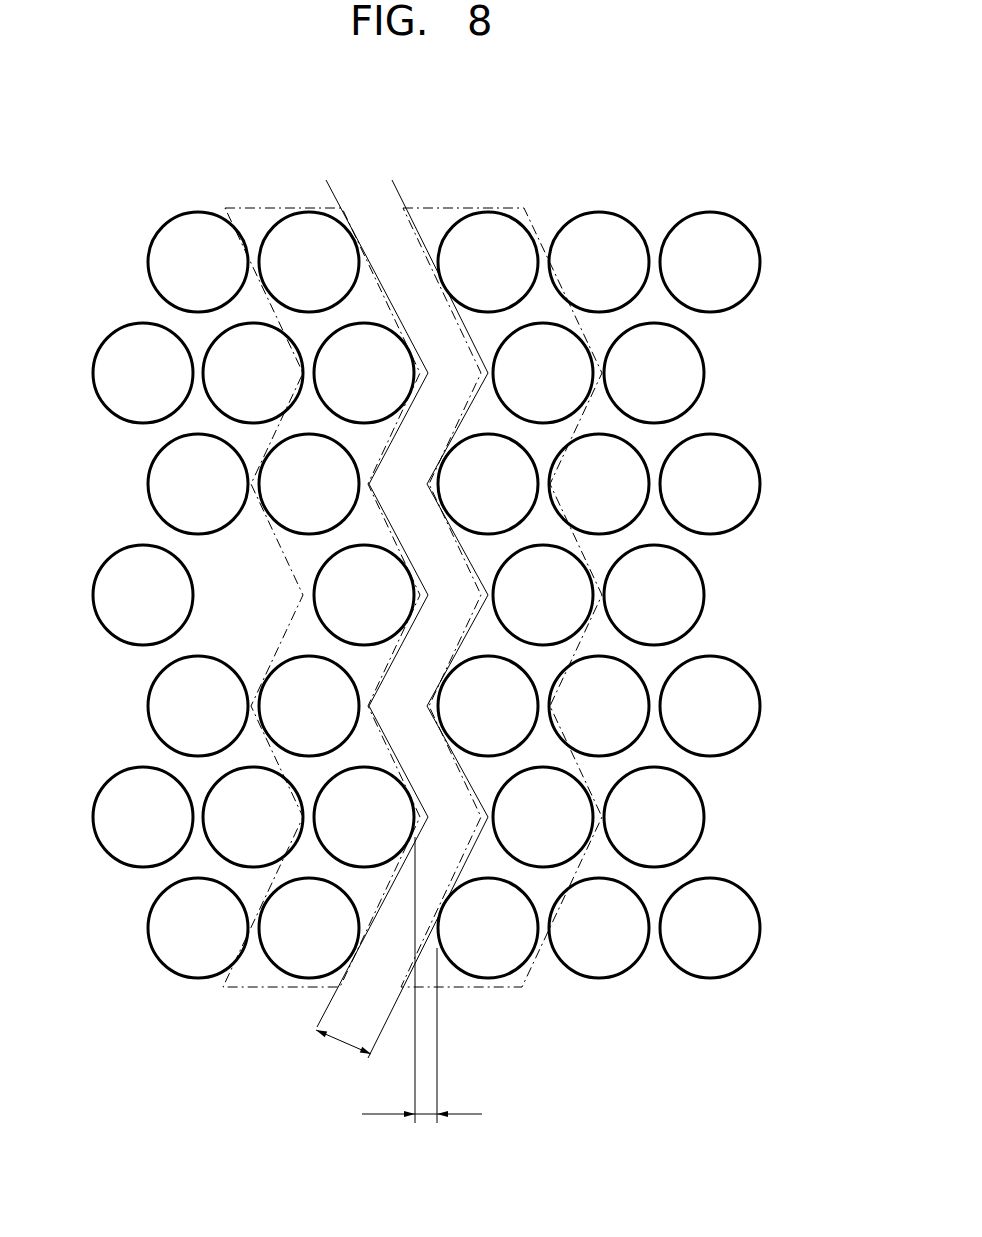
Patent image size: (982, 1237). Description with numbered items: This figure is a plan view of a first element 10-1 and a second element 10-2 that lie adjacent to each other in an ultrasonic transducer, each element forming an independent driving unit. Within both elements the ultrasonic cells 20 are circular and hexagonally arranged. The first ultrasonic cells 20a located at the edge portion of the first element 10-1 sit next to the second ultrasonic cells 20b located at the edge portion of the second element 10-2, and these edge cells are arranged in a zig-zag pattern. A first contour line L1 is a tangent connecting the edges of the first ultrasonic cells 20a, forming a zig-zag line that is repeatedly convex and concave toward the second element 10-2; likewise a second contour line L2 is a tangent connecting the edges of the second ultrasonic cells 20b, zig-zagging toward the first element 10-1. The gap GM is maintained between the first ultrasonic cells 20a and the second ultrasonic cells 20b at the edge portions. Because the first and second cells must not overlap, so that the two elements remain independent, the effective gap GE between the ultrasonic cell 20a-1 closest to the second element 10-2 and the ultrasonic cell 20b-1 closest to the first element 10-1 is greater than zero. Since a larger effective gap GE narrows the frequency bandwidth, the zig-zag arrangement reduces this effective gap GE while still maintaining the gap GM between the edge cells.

The first element 10-1 is at (106, 255).
The second element 10-2 is at (780, 236).
The ultrasonic cells 20 is at (100, 373).
The first ultrasonic cells 20a is at (265, 206).
The second ultrasonic cells 20b is at (463, 206).
The ultrasonic cell closest to the second element 20a-1 is at (363, 842).
The ultrasonic cell closest to the first element 20b-1 is at (477, 960).
The first contour line L1 is at (331, 189).
The second contour line L2 is at (400, 190).
The gap GM is at (343, 1051).
The effective gap GE is at (421, 980).